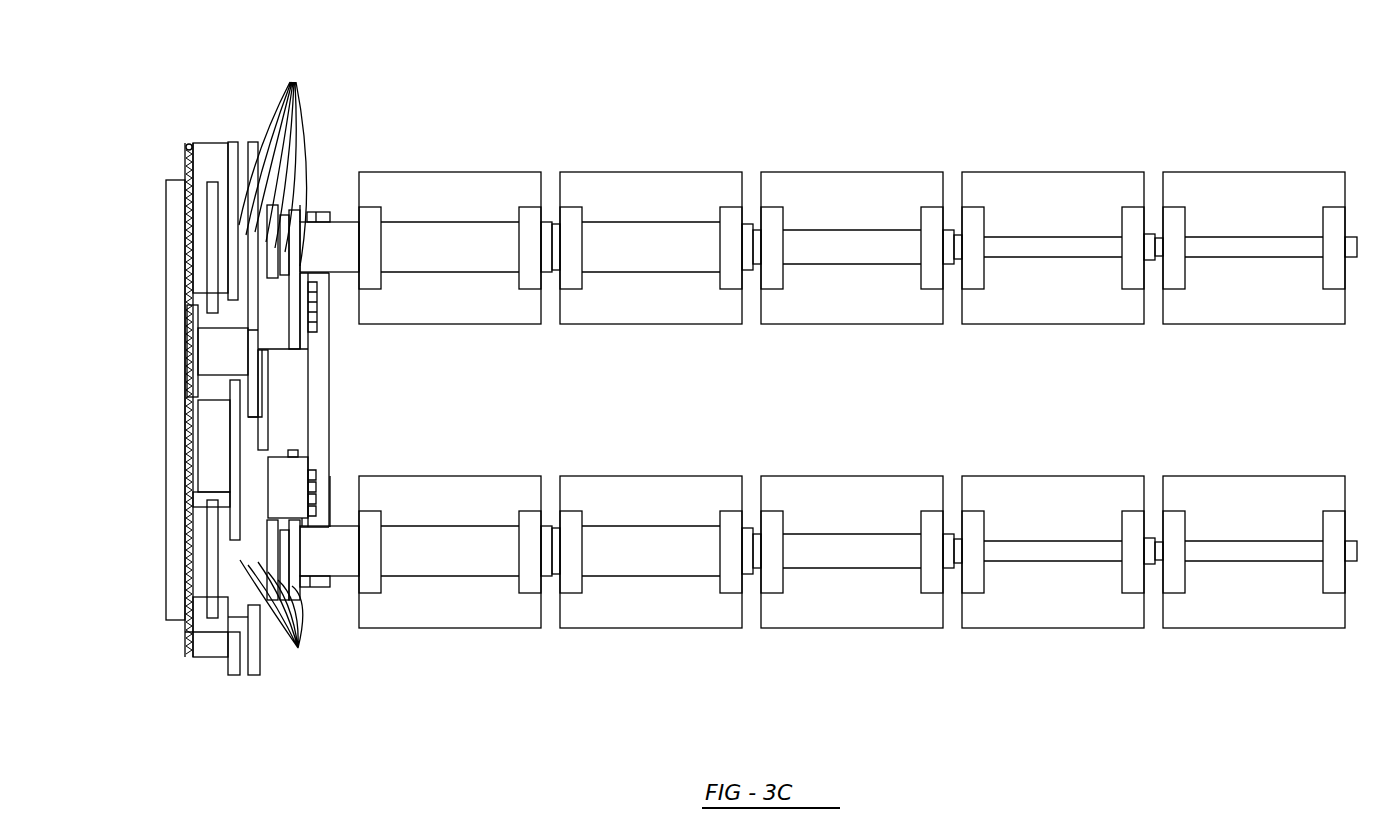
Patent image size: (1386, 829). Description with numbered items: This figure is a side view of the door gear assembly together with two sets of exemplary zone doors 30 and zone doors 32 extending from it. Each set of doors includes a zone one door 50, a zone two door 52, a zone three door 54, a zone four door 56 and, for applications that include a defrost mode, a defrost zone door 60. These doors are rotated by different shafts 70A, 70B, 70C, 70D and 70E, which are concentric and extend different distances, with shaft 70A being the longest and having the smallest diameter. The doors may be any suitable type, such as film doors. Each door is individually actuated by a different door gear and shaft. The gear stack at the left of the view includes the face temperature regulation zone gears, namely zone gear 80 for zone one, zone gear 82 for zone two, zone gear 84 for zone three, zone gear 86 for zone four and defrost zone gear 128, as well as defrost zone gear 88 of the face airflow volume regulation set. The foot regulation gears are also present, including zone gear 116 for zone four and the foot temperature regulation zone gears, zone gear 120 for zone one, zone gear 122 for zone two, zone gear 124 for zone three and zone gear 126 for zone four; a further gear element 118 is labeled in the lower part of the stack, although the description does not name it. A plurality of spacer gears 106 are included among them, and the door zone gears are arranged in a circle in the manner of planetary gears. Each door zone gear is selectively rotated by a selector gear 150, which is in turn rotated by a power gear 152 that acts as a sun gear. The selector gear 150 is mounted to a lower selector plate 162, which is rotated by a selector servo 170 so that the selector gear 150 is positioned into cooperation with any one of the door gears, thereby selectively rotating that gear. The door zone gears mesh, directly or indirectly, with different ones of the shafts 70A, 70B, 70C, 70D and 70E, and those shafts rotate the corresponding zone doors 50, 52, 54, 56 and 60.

The zone doors 30 is at (866, 70).
The zone doors 32 is at (898, 426).
The zone one door 50 is at (459, 387).
The zone two door 52 is at (1264, 402).
The zone three door 54 is at (660, 389).
The zone four door 56 is at (1062, 392).
The defrost zone door 60 is at (861, 393).
The shaft 70A is at (1260, 245).
The shaft 70B is at (1070, 245).
The shaft 70C is at (858, 242).
The shaft 70D is at (630, 242).
The shaft 70E is at (445, 242).
The zone gear 80 is at (302, 303).
The zone gear 82 is at (200, 215).
The zone gear 84 is at (313, 210).
The zone gear 86 is at (208, 160).
The defrost zone gear 88 is at (235, 150).
The spacer gears 106 is at (286, 364).
The zone gear 116 is at (207, 657).
The support bar 118 is at (242, 628).
The zone gear 120 is at (303, 588).
The zone gear 122 is at (200, 540).
The zone gear 124 is at (296, 487).
The zone gear 126 is at (200, 432).
The defrost zone gear 128 is at (228, 355).
The selector gear 150 is at (300, 355).
The power gear 152 is at (258, 432).
The lower selector plate 162 is at (322, 408).
The selector servo 170 is at (178, 303).